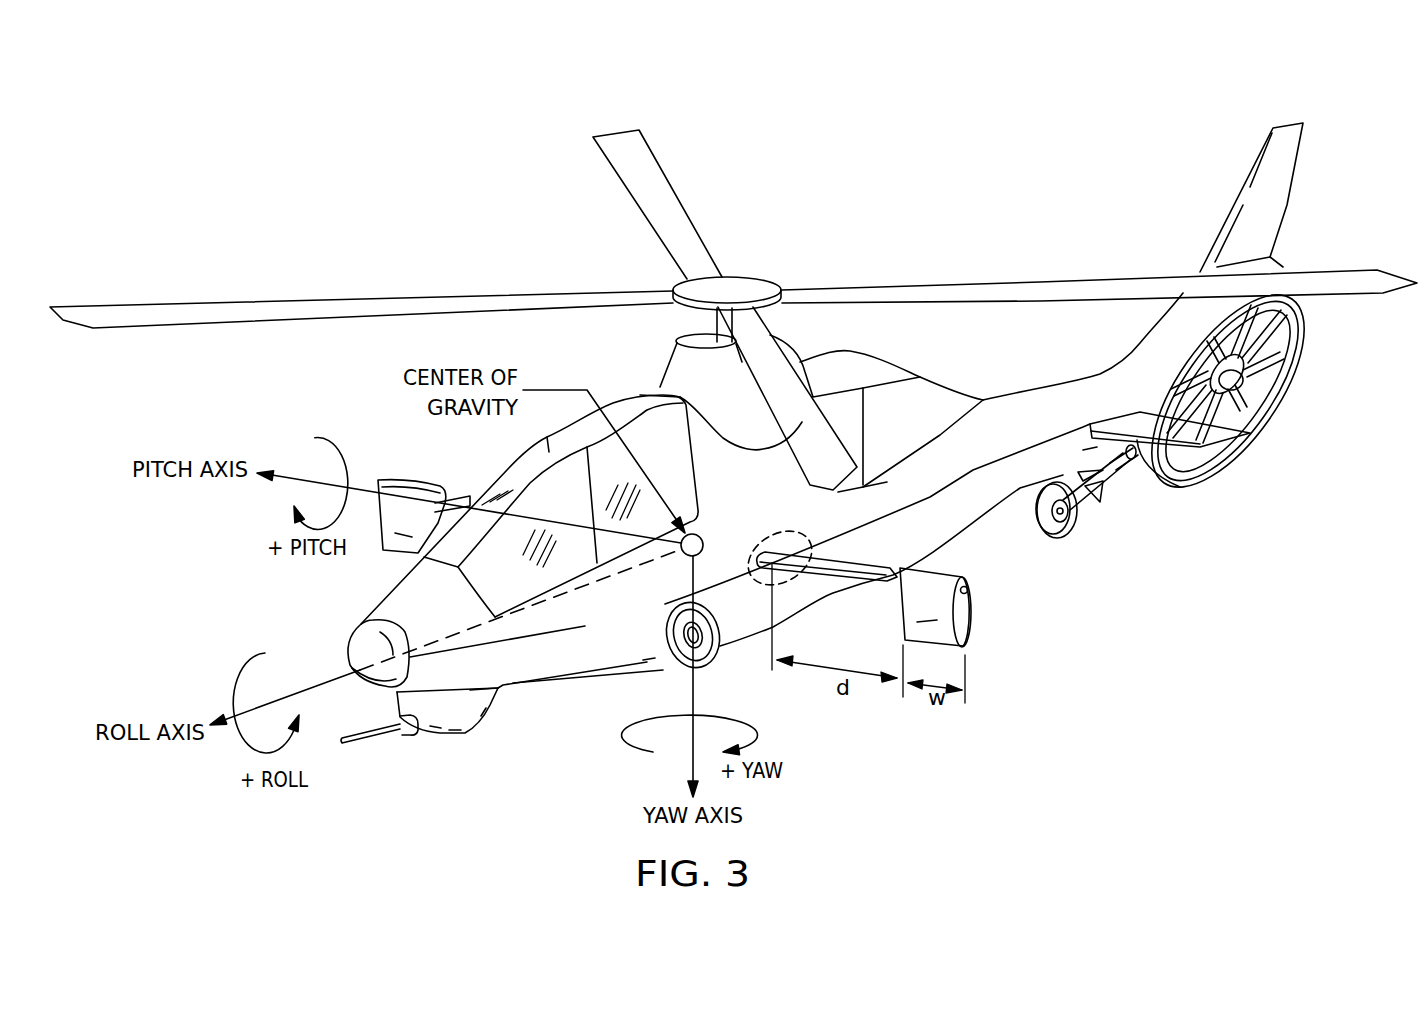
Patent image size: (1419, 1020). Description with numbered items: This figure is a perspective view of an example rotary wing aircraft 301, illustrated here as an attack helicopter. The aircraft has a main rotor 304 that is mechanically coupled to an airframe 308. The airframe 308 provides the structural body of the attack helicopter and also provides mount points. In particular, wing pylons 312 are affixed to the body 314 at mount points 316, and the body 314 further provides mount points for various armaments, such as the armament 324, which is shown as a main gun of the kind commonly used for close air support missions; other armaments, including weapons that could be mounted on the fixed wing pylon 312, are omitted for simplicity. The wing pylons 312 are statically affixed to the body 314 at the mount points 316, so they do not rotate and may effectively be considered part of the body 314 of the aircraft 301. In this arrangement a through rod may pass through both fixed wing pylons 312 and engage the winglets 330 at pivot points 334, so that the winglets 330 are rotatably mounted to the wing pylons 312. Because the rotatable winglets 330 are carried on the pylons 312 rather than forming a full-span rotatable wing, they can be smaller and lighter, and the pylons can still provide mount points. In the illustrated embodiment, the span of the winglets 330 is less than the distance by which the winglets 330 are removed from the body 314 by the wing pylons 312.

The rotary wing aircraft 301 is at (1012, 102).
The main rotor 304 is at (753, 275).
The airframe 308 is at (630, 370).
The wing pylon 312 is at (843, 582).
The body 314 is at (690, 602).
The mount point 316 is at (780, 530).
The armament 324 is at (373, 742).
The winglet 330 is at (971, 648).
The pivot point 334 is at (968, 590).